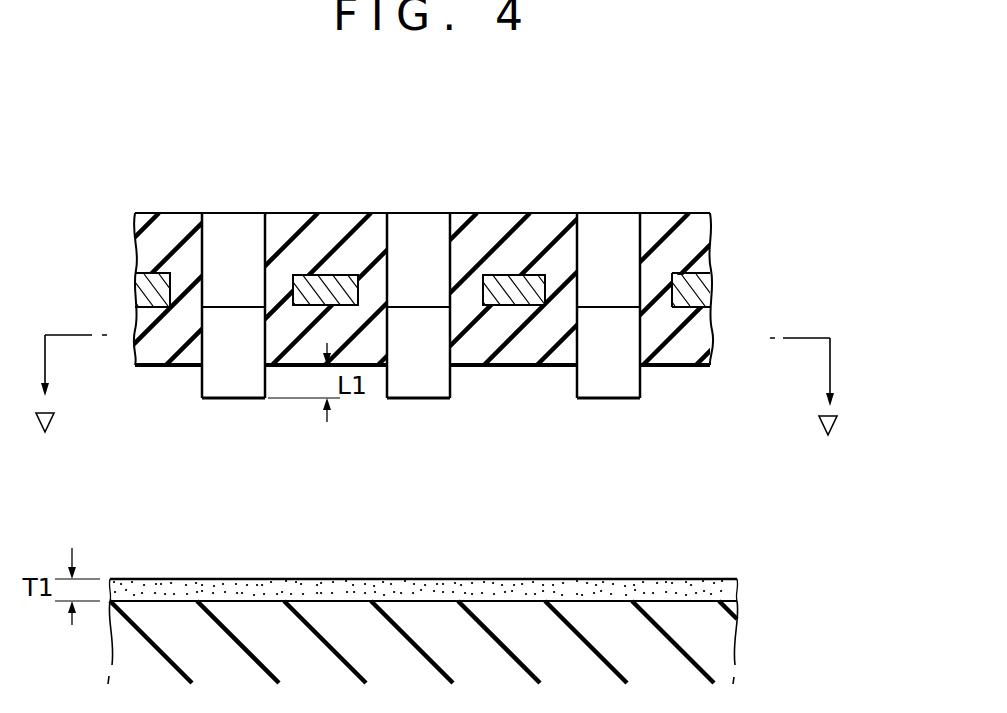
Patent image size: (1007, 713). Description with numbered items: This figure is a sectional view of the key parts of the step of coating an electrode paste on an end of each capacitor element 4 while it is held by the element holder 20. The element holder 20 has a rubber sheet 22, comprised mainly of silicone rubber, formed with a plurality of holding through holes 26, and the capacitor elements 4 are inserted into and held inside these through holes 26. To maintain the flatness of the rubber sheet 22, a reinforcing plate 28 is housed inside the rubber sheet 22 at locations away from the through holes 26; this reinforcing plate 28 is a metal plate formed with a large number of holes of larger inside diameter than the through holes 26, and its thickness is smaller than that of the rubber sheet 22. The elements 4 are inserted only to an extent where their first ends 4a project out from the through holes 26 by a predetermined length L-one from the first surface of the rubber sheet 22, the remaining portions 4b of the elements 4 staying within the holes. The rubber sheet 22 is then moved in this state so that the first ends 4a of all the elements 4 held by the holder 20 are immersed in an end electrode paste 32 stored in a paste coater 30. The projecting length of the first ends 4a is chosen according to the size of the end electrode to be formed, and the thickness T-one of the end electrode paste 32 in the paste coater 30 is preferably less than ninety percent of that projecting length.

The element holder 20 is at (427, 278).
The rubber sheet 22 is at (666, 236).
The through holes 26 is at (262, 240).
The reinforcing plate 28 is at (518, 280).
The capacitor element 4 is at (220, 337).
The first ends 4a is at (233, 382).
The electrode base portion 4b is at (227, 315).
The paste coater 30 is at (700, 646).
The end electrode paste 32 is at (657, 588).